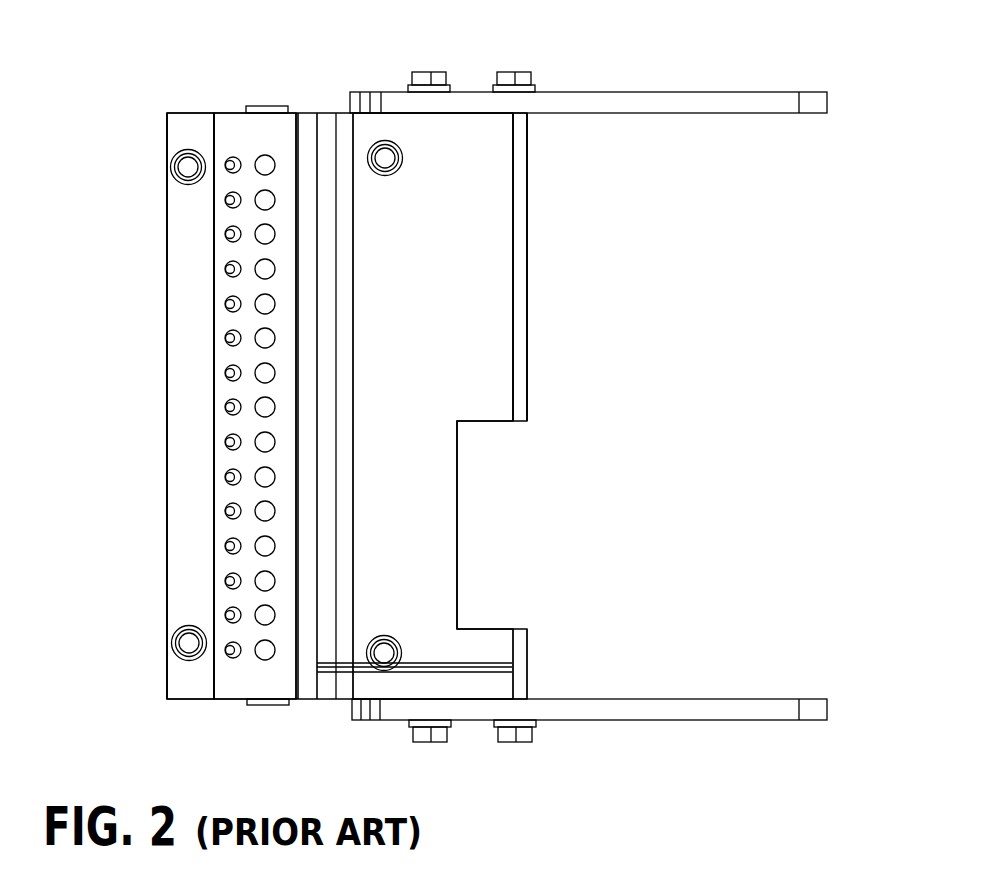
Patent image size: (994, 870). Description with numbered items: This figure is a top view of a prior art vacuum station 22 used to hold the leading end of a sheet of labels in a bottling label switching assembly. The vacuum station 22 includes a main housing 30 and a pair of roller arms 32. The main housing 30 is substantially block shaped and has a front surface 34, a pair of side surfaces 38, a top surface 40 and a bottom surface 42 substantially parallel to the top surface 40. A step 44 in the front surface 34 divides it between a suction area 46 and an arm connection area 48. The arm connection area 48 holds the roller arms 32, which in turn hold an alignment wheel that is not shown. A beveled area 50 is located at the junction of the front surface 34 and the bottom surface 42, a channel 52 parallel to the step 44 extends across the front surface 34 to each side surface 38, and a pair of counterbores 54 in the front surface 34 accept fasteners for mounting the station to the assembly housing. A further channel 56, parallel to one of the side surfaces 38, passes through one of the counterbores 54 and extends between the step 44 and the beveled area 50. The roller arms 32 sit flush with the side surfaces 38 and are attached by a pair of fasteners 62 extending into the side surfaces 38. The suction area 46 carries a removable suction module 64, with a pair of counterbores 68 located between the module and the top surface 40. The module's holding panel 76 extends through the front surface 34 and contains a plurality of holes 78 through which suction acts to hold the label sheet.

The vacuum station 22 is at (140, 131).
The main housing 30 is at (227, 102).
The roller arms 32 is at (700, 122).
The front surface 34 is at (396, 348).
The side surfaces 38 is at (195, 113).
The top surface 40 is at (167, 445).
The bottom surface 42 is at (528, 310).
The step 44 is at (317, 135).
The suction area 46 is at (195, 377).
The arm connection area 48 is at (540, 228).
The beveled area 50 is at (526, 160).
The channel 52 is at (346, 240).
The counterbores 54 is at (388, 160).
The channel 56 is at (445, 660).
The fasteners 62 is at (428, 76).
The removable suction module 64 is at (201, 576).
The counterbores 68 is at (182, 170).
The holding panel 76 is at (203, 247).
The holes 78 is at (230, 303).